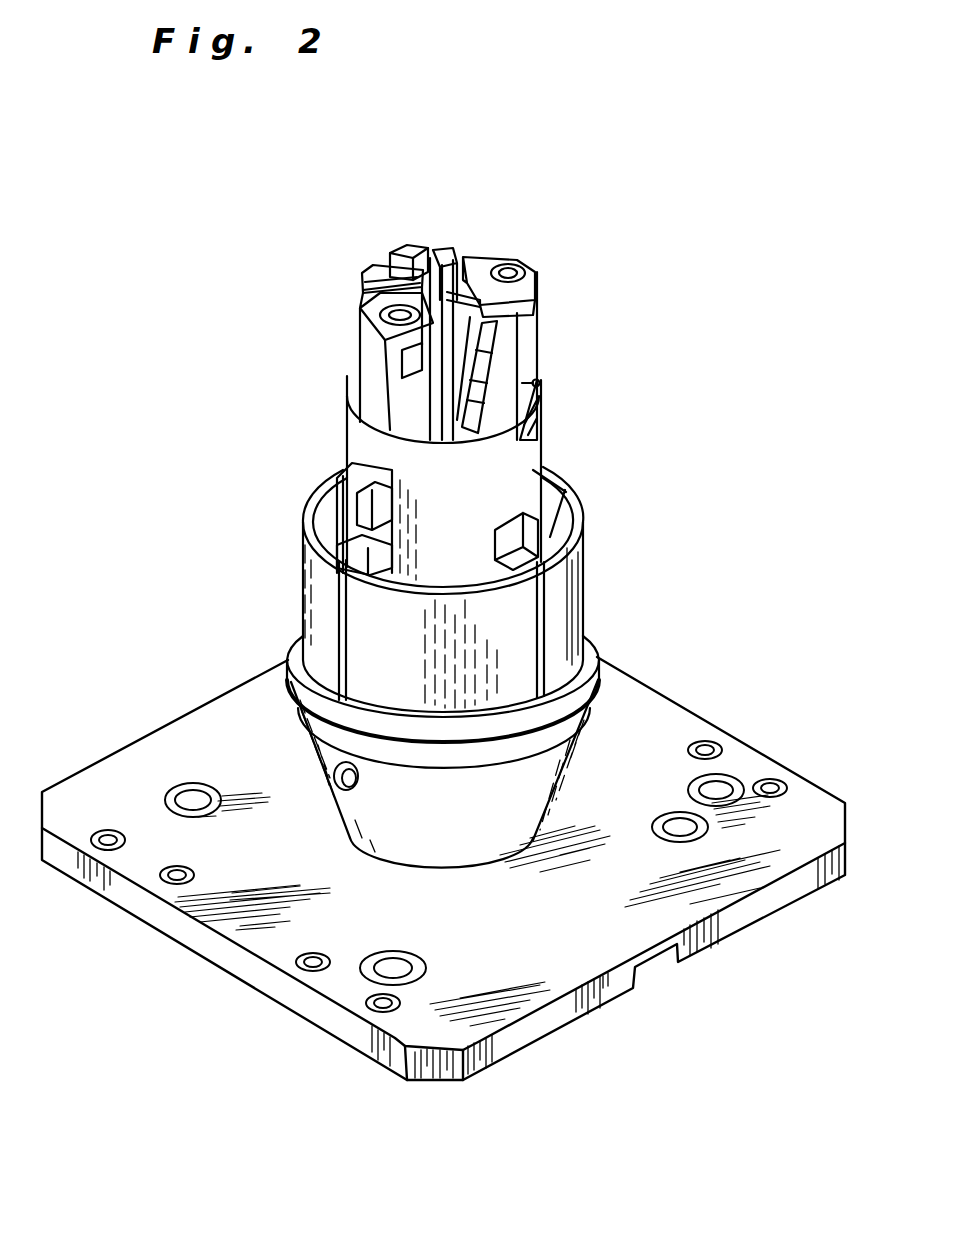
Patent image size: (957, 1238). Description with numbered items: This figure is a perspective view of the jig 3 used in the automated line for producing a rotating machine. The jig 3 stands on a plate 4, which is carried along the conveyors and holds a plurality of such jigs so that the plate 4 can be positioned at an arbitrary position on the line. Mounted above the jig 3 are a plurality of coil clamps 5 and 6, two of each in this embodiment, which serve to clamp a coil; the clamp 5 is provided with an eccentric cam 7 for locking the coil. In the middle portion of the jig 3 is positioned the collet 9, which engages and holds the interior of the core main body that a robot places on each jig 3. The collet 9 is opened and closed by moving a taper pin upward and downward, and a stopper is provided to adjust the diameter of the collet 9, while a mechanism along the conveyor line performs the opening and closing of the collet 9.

The jig 3 is at (541, 434).
The plate 4 is at (638, 718).
The coil clamp 5 is at (447, 253).
The coil clamp 6 is at (360, 343).
The eccentric cam 7 is at (410, 248).
The collet 9 is at (553, 590).